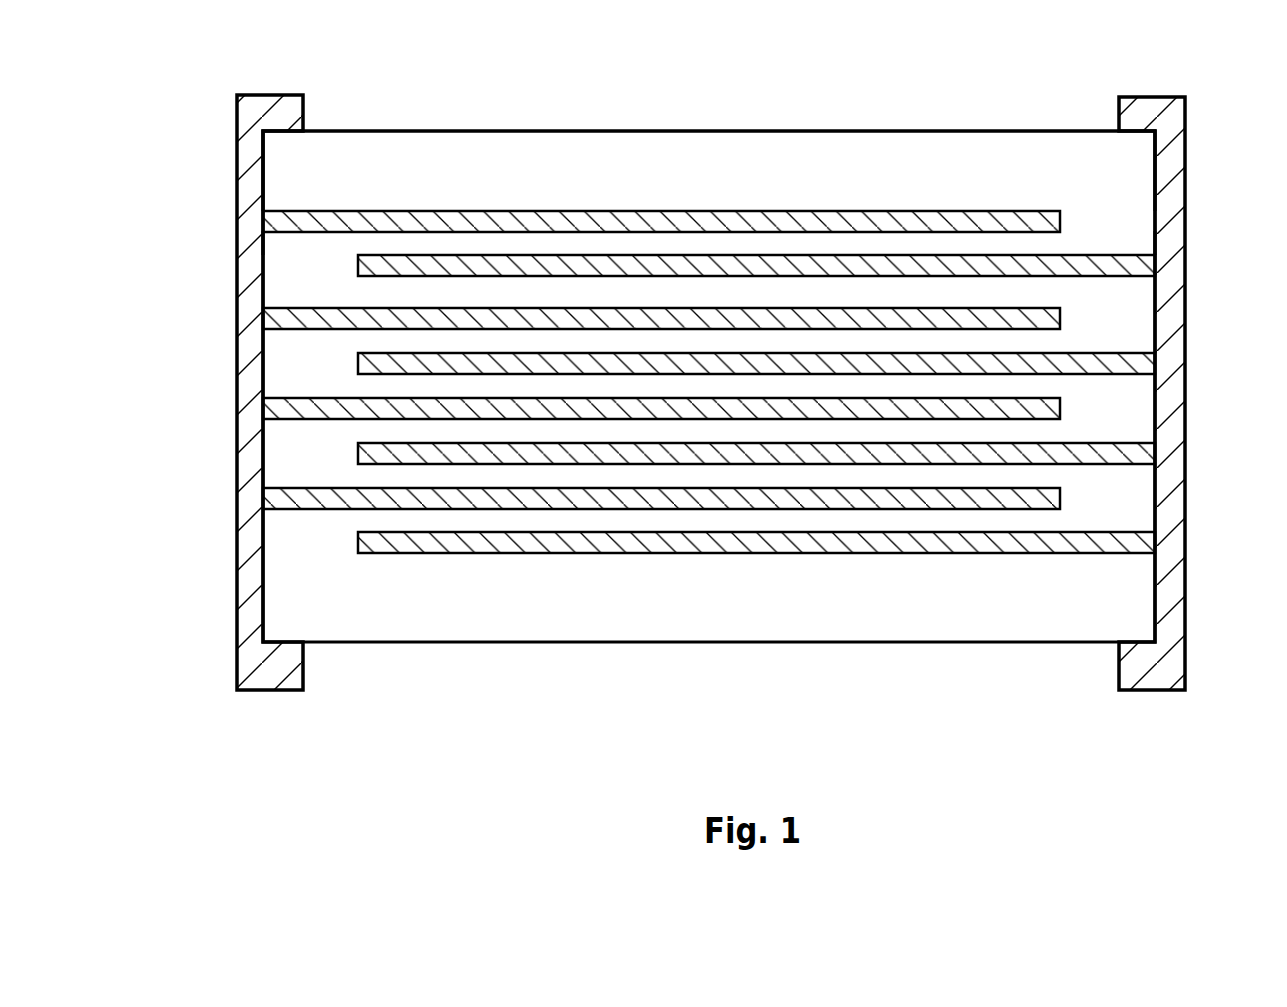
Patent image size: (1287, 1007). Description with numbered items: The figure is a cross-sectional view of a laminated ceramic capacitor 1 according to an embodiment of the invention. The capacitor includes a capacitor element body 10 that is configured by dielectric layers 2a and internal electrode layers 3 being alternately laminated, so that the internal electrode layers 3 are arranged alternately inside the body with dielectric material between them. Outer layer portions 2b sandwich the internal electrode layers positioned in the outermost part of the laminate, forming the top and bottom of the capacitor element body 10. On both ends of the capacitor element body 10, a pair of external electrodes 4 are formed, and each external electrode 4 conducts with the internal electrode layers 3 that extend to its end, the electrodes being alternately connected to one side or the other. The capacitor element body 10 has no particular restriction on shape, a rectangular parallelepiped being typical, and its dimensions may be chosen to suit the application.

The laminated ceramic capacitor 1 is at (706, 432).
The capacitor element body 10 is at (742, 643).
The dielectric layers 2a is at (557, 247).
The outer layer portions 2b is at (845, 165).
The internal electrode layers 3 is at (847, 410).
The external electrodes 4 is at (253, 150).